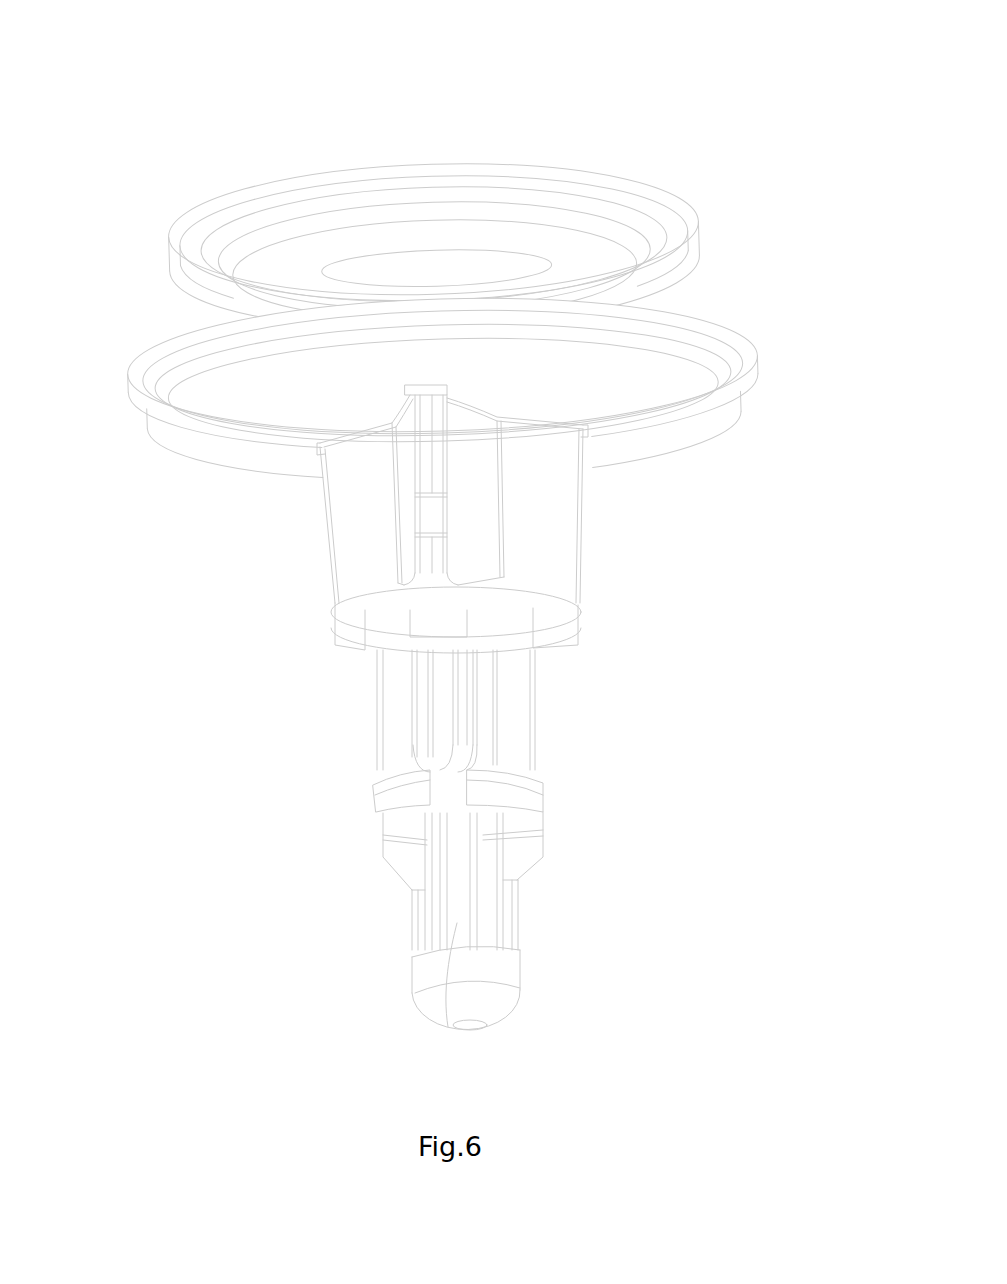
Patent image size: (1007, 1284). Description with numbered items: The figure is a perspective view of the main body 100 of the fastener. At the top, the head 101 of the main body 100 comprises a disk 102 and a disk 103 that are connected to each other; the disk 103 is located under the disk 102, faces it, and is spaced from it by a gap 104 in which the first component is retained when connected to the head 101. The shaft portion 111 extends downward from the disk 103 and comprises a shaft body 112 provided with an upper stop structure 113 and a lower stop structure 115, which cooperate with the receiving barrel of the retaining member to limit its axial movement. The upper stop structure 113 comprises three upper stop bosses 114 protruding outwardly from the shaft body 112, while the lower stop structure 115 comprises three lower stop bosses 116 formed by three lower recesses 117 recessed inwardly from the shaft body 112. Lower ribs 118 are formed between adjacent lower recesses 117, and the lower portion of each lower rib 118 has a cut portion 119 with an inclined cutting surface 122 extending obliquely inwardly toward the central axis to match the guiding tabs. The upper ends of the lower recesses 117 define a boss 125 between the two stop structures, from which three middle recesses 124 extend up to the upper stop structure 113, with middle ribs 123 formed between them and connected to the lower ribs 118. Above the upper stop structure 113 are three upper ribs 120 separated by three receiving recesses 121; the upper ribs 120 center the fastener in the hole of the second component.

The main body 100 is at (770, 88).
The head 101 is at (745, 192).
The disk 102 is at (175, 248).
The disk 103 is at (137, 365).
The gap 104 is at (183, 312).
The shaft portion 111 is at (700, 1012).
The shaft body 112 is at (497, 597).
The upper stop structure 113 is at (387, 573).
The upper stop bosses 114 is at (330, 607).
The lower stop structure 115 is at (425, 975).
The lower stop bosses 116 is at (423, 950).
The lower recesses 117 is at (433, 913).
The lower ribs 118 is at (400, 857).
The cut portion 119 is at (450, 1023).
The upper ribs 120 is at (317, 490).
The receiving recesses 121 is at (387, 495).
The inclined cutting surface 122 is at (417, 830).
The middle ribs 123 is at (455, 683).
The middle recesses 124 is at (483, 745).
The boss 125 is at (400, 780).